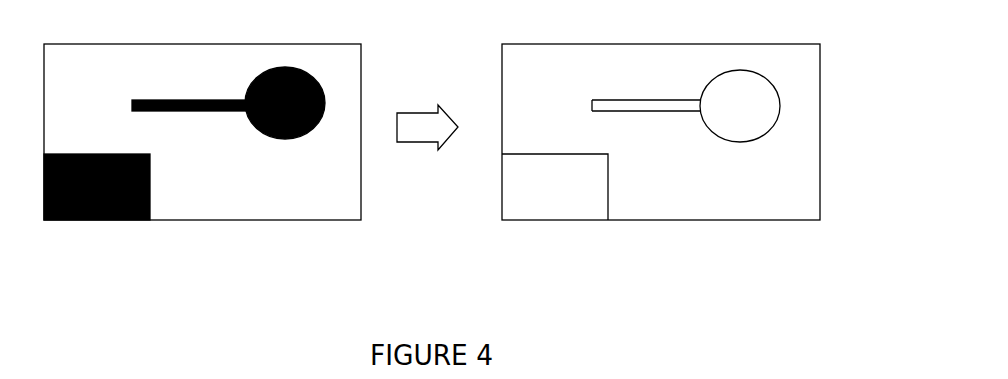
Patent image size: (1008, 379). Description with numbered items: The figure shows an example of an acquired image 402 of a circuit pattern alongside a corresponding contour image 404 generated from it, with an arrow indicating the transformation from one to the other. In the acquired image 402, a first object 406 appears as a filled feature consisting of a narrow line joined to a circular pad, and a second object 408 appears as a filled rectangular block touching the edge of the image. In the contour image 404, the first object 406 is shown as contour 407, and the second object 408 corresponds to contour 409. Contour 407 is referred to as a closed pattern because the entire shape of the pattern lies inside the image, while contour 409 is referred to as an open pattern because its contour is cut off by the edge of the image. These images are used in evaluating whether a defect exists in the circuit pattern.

The acquired image 402 is at (131, 44).
The contour image 404 is at (563, 44).
The first object 406 is at (316, 76).
The contour 407 is at (782, 105).
The second object 408 is at (97, 220).
The contour 409 is at (555, 220).